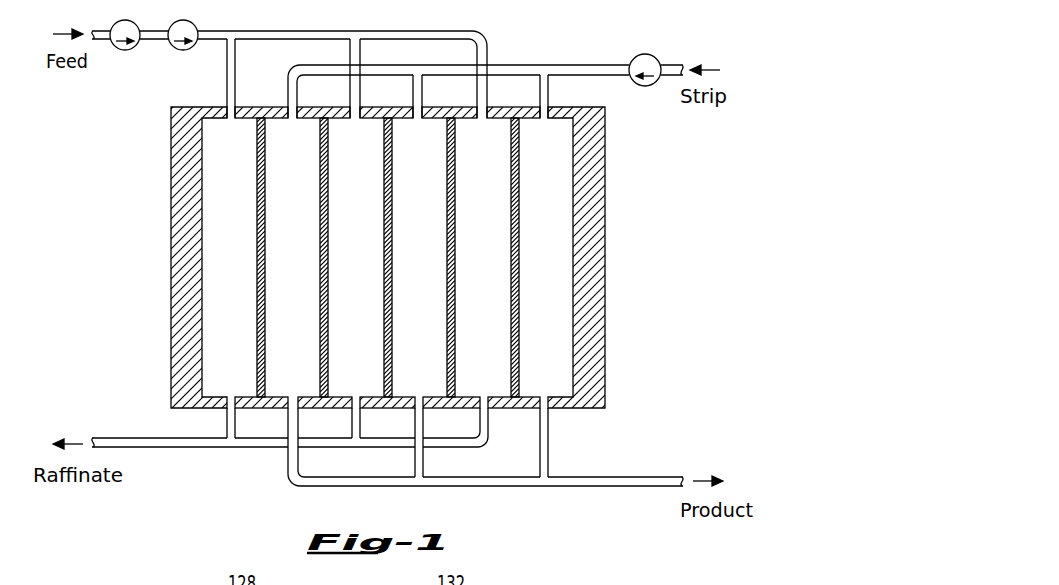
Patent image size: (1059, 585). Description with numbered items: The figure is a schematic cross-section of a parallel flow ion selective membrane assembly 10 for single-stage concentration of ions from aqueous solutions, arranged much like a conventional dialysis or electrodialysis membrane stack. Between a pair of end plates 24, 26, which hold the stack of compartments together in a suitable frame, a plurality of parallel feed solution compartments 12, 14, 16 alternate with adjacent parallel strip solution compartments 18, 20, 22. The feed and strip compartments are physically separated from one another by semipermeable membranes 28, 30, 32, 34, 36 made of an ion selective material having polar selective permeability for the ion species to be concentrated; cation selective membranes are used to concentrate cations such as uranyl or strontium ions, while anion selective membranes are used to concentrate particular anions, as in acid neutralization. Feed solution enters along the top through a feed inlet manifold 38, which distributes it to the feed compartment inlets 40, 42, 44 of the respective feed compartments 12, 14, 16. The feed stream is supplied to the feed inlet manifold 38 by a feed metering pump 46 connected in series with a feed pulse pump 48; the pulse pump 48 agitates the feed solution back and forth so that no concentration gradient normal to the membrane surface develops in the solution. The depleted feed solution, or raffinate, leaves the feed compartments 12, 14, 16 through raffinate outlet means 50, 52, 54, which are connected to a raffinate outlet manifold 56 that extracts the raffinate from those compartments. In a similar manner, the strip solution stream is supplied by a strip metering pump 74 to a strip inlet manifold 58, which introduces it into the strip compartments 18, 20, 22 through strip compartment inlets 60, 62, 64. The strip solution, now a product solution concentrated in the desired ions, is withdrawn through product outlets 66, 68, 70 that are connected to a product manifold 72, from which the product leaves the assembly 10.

The membrane assembly 10 is at (593, 417).
The feed solution compartment 12 is at (238, 282).
The feed solution compartment 14 is at (365, 282).
The feed solution compartment 16 is at (492, 282).
The strip solution compartment 18 is at (300, 327).
The strip solution compartment 20 is at (428, 327).
The strip solution compartment 22 is at (555, 327).
The end plate 24 is at (171, 266).
The end plate 26 is at (606, 265).
The semipermeable membrane 28 is at (276, 160).
The semipermeable membrane 30 is at (329, 172).
The semipermeable membrane 32 is at (393, 172).
The semipermeable membrane 34 is at (457, 172).
The semipermeable membrane 36 is at (520, 172).
The feed inlet manifold 38 is at (383, 29).
The feed compartment inlet 40 is at (236, 73).
The feed compartment inlet 42 is at (368, 49).
The feed compartment inlet 44 is at (488, 43).
The feed metering pump 46 is at (118, 48).
The feed pulse pump 48 is at (176, 48).
The raffinate outlet means 50 is at (236, 430).
The raffinate outlet means 52 is at (361, 428).
The raffinate outlet means 54 is at (497, 418).
The raffinate outlet manifold 56 is at (160, 449).
The strip inlet manifold 58 is at (571, 65).
The strip compartment inlet 60 is at (298, 97).
The strip compartment inlet 62 is at (423, 97).
The strip compartment inlet 64 is at (549, 94).
The product outlet 66 is at (308, 455).
The product outlet 68 is at (424, 464).
The product outlet 70 is at (549, 460).
The product manifold 72 is at (487, 486).
The strip metering pump 74 is at (658, 44).